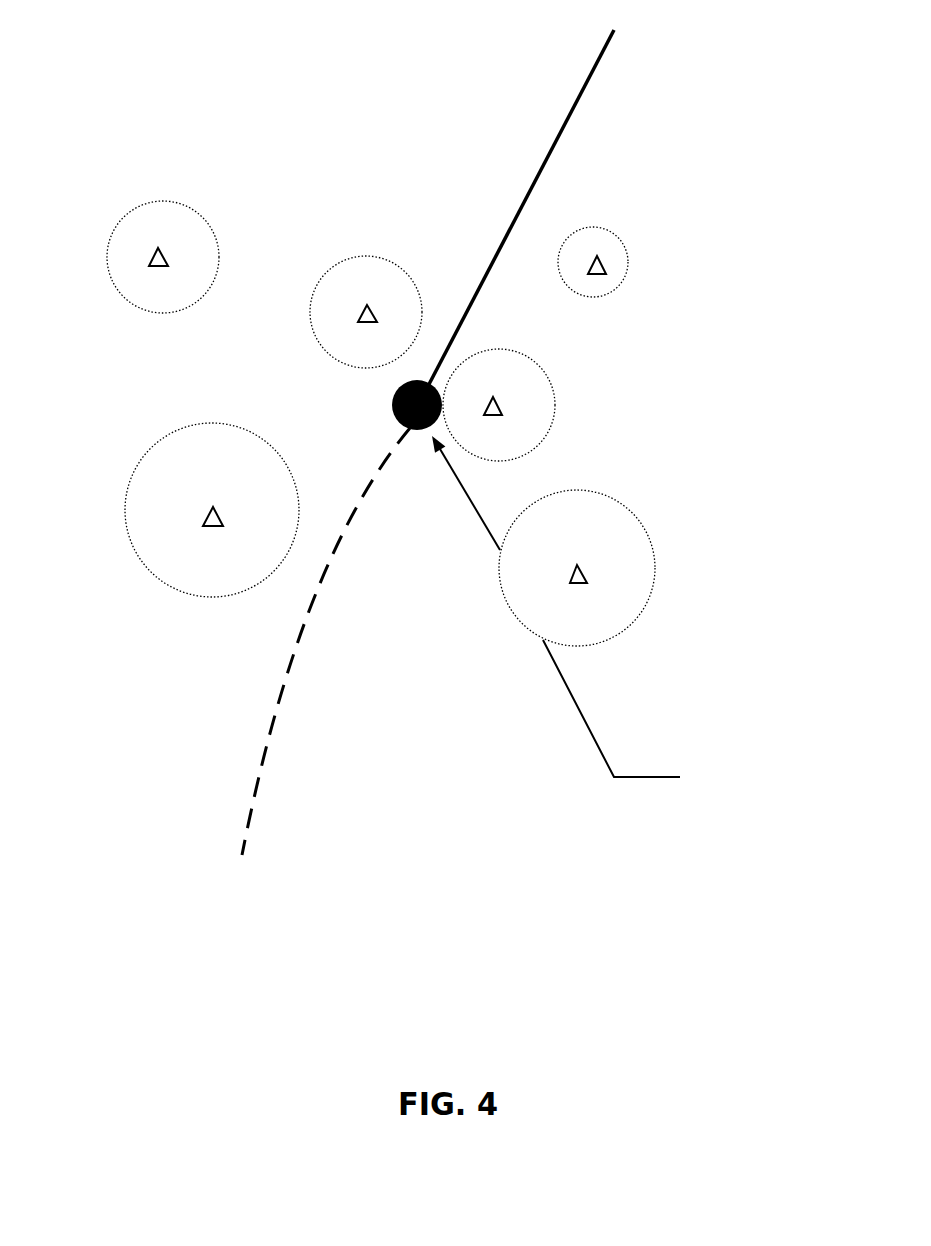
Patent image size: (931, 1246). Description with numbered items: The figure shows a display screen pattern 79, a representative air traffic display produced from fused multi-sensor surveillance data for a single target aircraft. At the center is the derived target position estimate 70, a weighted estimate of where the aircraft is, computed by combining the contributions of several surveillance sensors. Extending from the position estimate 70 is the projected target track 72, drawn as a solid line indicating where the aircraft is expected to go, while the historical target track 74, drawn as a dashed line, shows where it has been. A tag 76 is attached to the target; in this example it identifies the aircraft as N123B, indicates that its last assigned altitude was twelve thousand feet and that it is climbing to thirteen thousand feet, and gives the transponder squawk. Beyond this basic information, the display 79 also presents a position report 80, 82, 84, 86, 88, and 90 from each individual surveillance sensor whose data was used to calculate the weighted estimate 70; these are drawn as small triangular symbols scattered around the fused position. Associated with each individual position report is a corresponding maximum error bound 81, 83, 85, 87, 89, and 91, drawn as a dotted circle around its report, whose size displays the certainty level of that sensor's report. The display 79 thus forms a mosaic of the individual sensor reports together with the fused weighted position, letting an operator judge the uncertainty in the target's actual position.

The derived target position estimate 70 is at (393, 404).
The projected target track 72 is at (497, 237).
The historical target track 74 is at (291, 657).
The tag 76 is at (800, 757).
The display screen pattern 79 is at (752, 128).
The position report 80 is at (602, 258).
The maximum error bound 81 is at (573, 231).
The position report 82 is at (585, 570).
The maximum error bound 83 is at (606, 498).
The position report 84 is at (499, 403).
The maximum error bound 85 is at (498, 351).
The position report 86 is at (365, 308).
The maximum error bound 87 is at (421, 313).
The position report 88 is at (154, 252).
The maximum error bound 89 is at (164, 201).
The position report 90 is at (207, 518).
The maximum error bound 91 is at (150, 445).